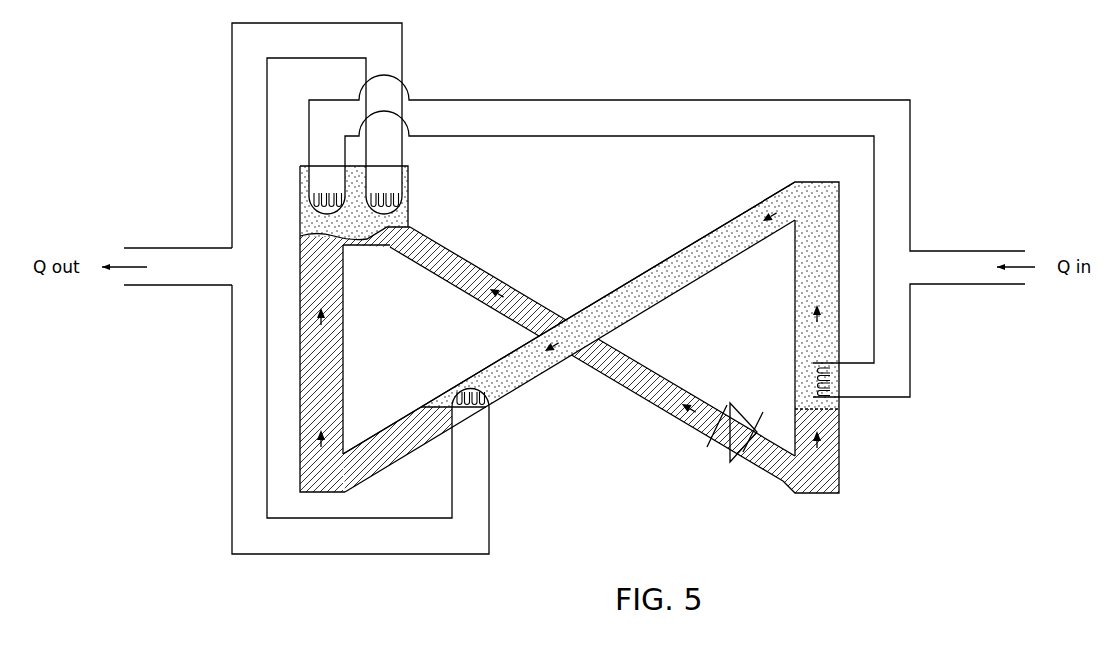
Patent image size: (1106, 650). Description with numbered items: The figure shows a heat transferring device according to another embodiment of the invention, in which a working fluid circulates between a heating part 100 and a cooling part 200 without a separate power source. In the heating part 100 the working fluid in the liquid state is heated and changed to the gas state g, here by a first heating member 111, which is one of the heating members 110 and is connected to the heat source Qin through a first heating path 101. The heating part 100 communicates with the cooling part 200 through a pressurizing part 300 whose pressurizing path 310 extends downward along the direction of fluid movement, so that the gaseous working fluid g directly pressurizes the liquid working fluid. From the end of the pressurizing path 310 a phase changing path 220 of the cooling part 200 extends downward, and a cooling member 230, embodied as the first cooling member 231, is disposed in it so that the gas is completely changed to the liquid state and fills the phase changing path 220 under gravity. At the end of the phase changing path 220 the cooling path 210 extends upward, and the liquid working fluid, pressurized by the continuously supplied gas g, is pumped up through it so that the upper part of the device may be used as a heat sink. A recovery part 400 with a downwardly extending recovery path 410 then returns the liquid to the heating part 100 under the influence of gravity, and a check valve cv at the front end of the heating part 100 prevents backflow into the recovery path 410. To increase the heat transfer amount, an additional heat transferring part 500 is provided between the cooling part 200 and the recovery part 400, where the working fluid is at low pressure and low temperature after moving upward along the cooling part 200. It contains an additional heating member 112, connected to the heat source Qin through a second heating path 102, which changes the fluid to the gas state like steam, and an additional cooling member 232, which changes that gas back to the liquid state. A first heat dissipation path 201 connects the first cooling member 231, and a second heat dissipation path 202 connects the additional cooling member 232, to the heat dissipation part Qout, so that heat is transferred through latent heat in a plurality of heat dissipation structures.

The heating part 100 is at (553, 325).
The first heating path 101 is at (910, 322).
The second heating path 102 is at (892, 152).
The heating member 110 is at (524, 336).
The first heating member 111 is at (840, 427).
The additional heating member 112 is at (299, 215).
The cooling part 200 is at (440, 311).
The first heat dissipation path 201 is at (232, 327).
The second heat dissipation path 202 is at (232, 100).
The cooling path 210 is at (299, 413).
The phase changing path 220 is at (306, 311).
The cooling member 230 is at (486, 337).
The first cooling member 231 is at (492, 407).
The additional cooling member 232 is at (410, 203).
The pressurizing part 300 is at (569, 337).
The pressurizing path 310 is at (537, 378).
The recovery part 400 is at (592, 354).
The recovery path 410 is at (548, 305).
The additional heat transferring part 500 is at (299, 182).
The check valve cv is at (728, 462).
The gas state g is at (340, 146).